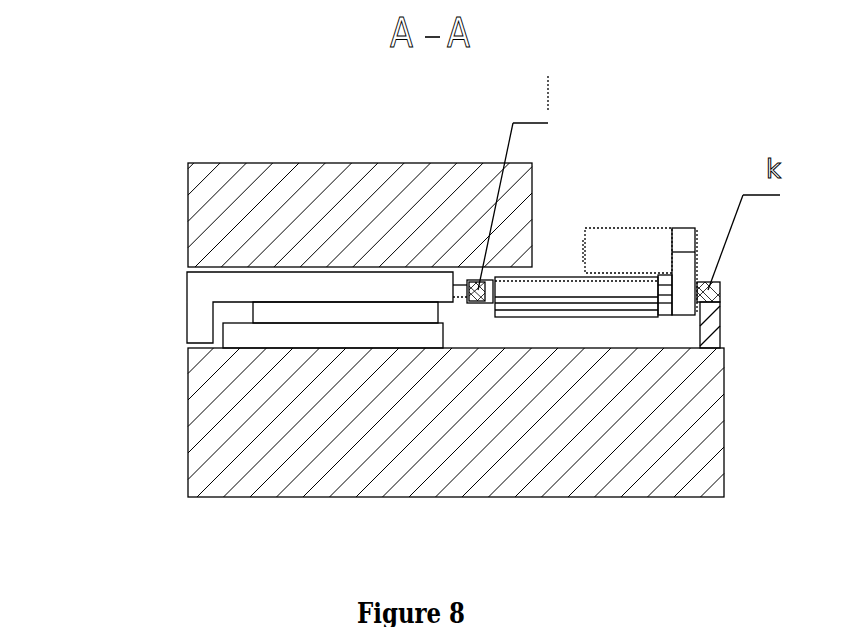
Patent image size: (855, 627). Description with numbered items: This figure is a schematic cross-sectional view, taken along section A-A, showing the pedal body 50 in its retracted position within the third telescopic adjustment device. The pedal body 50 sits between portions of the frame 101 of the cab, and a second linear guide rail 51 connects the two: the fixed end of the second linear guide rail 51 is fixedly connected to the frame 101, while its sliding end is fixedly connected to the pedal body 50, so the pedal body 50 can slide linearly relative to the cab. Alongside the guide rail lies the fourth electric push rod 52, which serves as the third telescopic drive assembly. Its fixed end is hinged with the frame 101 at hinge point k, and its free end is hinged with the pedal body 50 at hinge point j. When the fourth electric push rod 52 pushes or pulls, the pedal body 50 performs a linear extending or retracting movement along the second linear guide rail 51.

The frame 101 is at (413, 192).
The pedal body 50 is at (195, 295).
The second linear guide rail 51 is at (277, 332).
The fourth electric push rod 52 is at (597, 290).